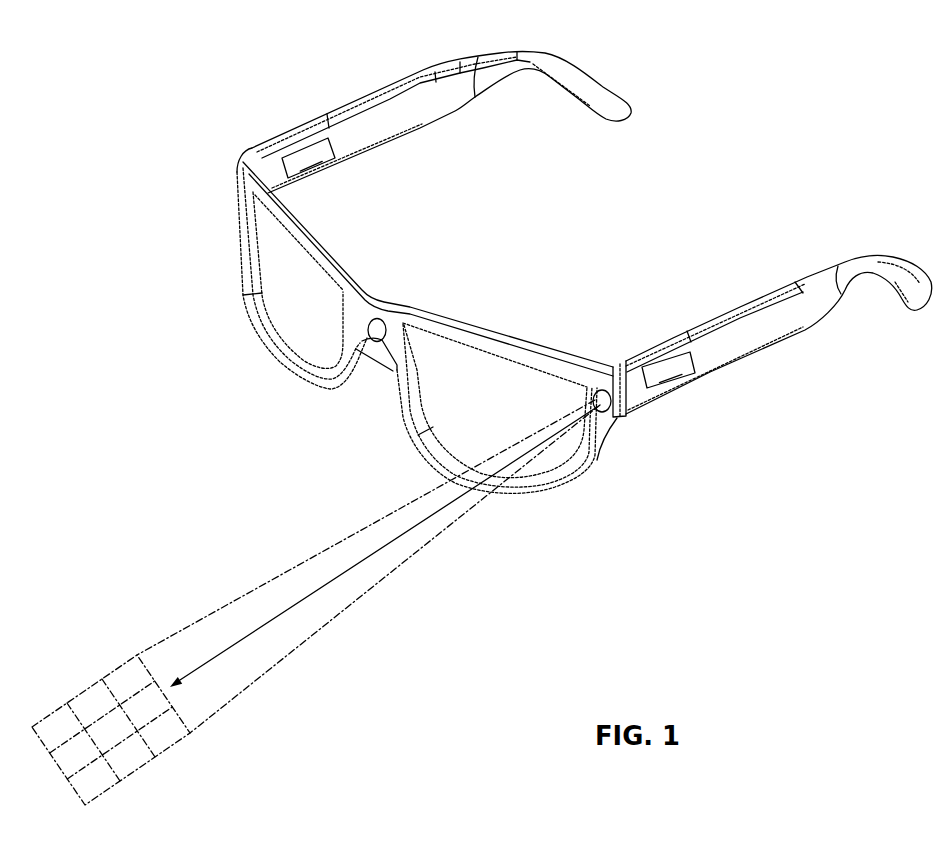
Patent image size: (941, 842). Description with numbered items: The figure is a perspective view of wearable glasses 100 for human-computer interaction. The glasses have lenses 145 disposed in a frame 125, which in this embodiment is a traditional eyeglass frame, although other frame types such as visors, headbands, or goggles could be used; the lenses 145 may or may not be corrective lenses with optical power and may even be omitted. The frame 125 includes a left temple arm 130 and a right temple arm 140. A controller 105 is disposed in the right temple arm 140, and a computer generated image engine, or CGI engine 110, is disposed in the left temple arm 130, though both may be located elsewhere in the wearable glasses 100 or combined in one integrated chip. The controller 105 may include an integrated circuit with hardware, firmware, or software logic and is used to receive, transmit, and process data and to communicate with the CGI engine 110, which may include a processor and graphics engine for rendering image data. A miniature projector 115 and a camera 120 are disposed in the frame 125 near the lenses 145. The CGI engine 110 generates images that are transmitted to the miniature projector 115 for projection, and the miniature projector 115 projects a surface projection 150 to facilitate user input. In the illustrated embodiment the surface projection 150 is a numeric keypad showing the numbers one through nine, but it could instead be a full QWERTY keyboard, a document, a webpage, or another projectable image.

The wearable glasses 100 is at (252, 102).
The controller 105 is at (334, 146).
The computer generated image (CGI) engine 110 is at (697, 365).
The miniature projector 115 is at (600, 390).
The camera 120 is at (378, 318).
The frame 125 is at (237, 172).
The left temple arm 130 is at (753, 338).
The right temple arm 140 is at (401, 121).
The lenses 145 is at (301, 307).
The surface projection 150 is at (185, 760).